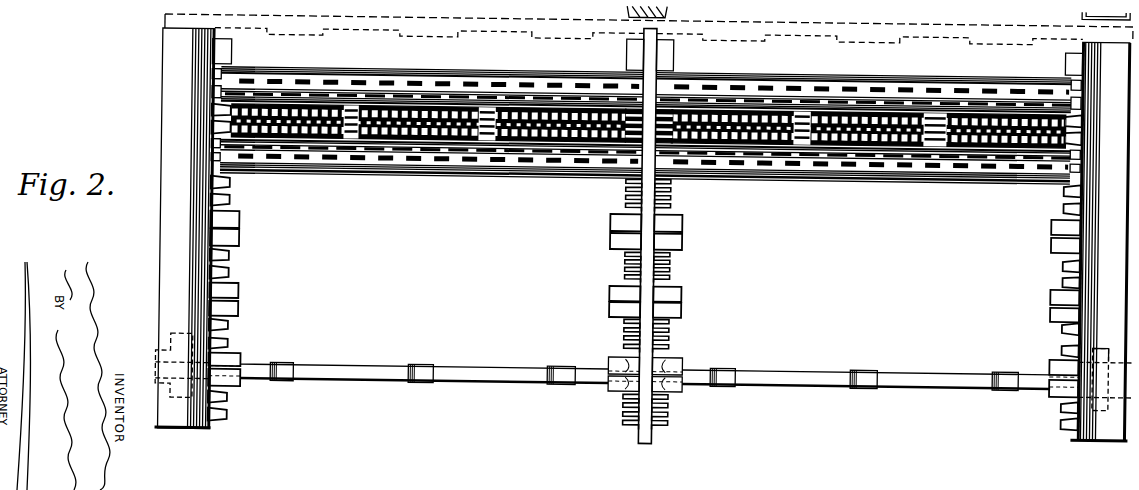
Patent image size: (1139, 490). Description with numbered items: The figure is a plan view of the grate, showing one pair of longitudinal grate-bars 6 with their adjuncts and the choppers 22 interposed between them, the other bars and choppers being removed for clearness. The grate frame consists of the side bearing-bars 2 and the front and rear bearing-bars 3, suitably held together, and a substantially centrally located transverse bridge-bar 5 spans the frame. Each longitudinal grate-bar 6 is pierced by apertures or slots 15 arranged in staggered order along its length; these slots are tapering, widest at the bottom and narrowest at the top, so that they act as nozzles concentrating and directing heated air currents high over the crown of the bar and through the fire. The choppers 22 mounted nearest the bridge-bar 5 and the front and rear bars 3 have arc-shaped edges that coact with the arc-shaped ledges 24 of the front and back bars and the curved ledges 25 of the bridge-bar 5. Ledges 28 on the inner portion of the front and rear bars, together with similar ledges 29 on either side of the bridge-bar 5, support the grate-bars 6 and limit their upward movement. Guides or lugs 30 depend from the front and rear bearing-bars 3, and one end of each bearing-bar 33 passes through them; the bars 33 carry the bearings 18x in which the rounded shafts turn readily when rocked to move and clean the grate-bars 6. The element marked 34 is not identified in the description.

The side bearing-bar 2 is at (872, 22).
The front and rear bearing-bar 3 is at (644, 234).
The transverse bridge-bar 5 is at (684, 233).
The longitudinal grate-bar 6 is at (428, 67).
The apertures or slots 15 is at (525, 77).
The choppers 22 is at (343, 137).
The arc-shaped ledges 24 is at (213, 126).
The arc-shaped ledges 25 is at (677, 96).
The ledges 28 is at (242, 234).
The ledges 29 is at (615, 232).
The guides or lugs 30 is at (176, 346).
The bearing-bar 33 is at (492, 378).
The wedge block 34 is at (229, 270).
The bearings 18x is at (1012, 356).